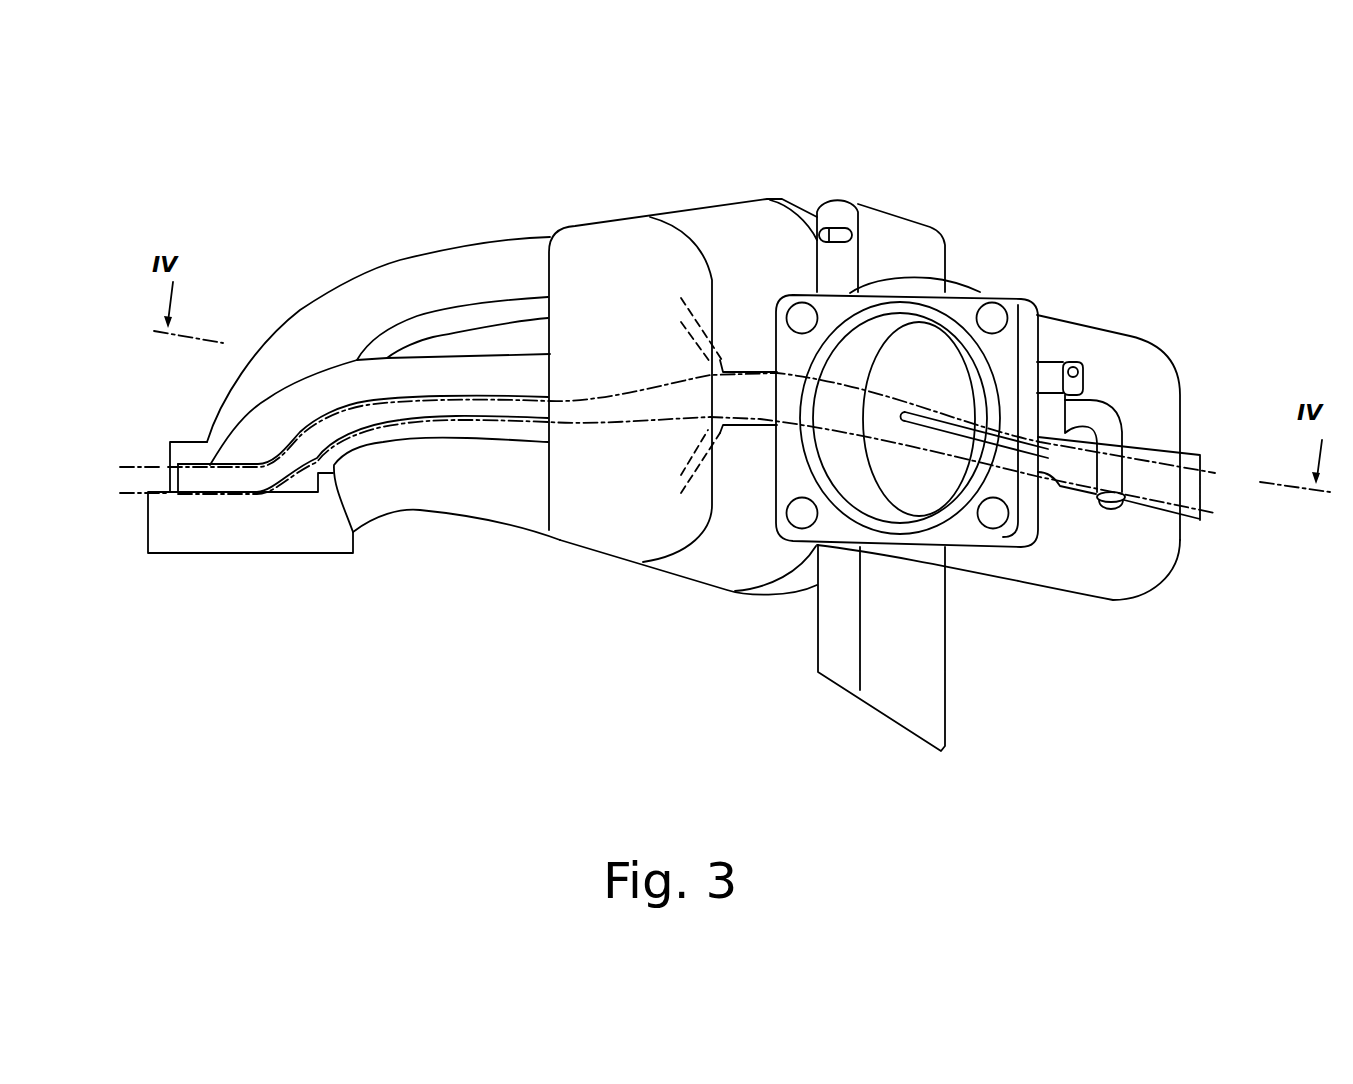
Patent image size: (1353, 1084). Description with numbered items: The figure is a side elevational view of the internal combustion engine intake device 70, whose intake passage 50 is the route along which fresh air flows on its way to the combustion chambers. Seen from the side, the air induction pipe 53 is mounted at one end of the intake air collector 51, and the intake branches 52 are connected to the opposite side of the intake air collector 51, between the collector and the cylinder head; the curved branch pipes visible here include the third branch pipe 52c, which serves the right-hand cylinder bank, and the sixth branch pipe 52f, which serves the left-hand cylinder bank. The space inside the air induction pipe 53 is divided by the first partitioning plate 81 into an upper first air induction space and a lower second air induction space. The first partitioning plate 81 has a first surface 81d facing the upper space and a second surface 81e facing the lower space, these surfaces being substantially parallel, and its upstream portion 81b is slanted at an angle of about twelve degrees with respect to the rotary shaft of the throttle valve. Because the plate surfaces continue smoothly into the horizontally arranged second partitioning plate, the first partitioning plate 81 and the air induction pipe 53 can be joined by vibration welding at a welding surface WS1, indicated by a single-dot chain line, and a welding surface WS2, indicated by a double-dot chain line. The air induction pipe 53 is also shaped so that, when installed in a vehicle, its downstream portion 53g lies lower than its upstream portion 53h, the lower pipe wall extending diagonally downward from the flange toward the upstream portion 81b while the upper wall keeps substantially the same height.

The intake passage 50 is at (1133, 241).
The intake air collector 51 is at (730, 238).
The intake branches 52 is at (401, 622).
The third branch pipe 52c is at (402, 281).
The sixth branch pipe 52f is at (417, 500).
The air induction pipe 53 is at (1090, 340).
The downstream portion 53g is at (1077, 612).
The upstream portion 53h is at (972, 578).
The intake device 70 is at (567, 708).
The first partitioning plate 81 is at (903, 428).
The upstream portion 81b is at (928, 403).
The first surface 81d is at (963, 405).
The second surface 81e is at (960, 417).
The welding surface WS1 is at (147, 456).
The welding surface WS2 is at (134, 504).